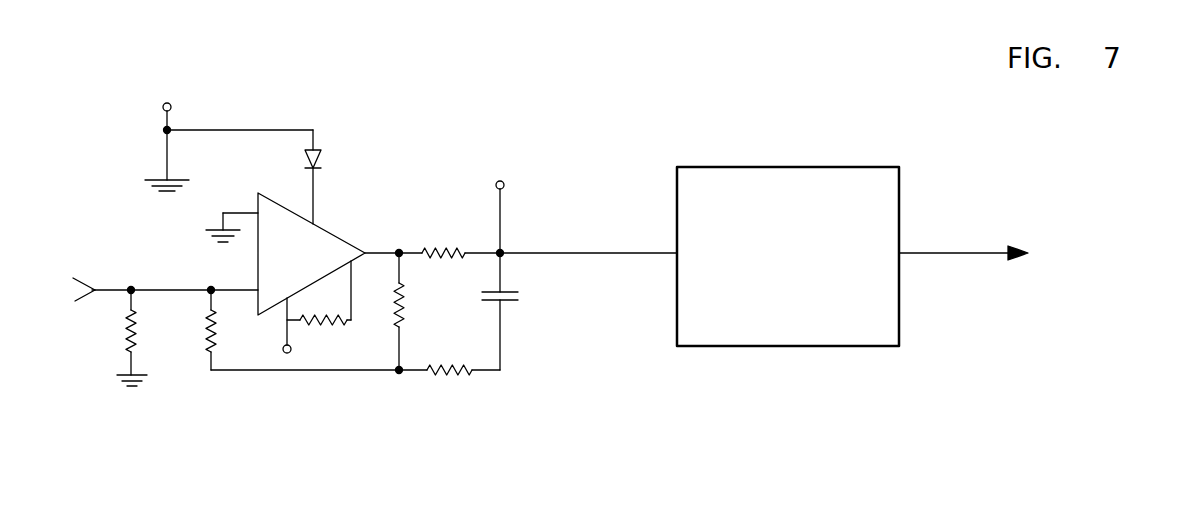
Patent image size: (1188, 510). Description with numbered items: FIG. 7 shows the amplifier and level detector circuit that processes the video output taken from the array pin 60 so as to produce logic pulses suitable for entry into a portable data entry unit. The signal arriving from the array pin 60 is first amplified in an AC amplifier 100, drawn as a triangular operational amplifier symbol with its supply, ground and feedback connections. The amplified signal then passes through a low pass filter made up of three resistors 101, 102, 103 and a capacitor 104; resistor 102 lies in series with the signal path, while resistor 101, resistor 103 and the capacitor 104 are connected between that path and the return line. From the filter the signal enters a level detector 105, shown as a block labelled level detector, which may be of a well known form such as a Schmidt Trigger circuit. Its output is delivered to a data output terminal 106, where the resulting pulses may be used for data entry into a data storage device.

The array pin 60 is at (92, 290).
The AC amplifier 100 is at (340, 238).
The resistor 101 is at (394, 301).
The resistor 102 is at (428, 243).
The resistor 103 is at (432, 367).
The capacitor 104 is at (512, 305).
The level detector 105 is at (719, 162).
The data output terminal 106 is at (933, 252).